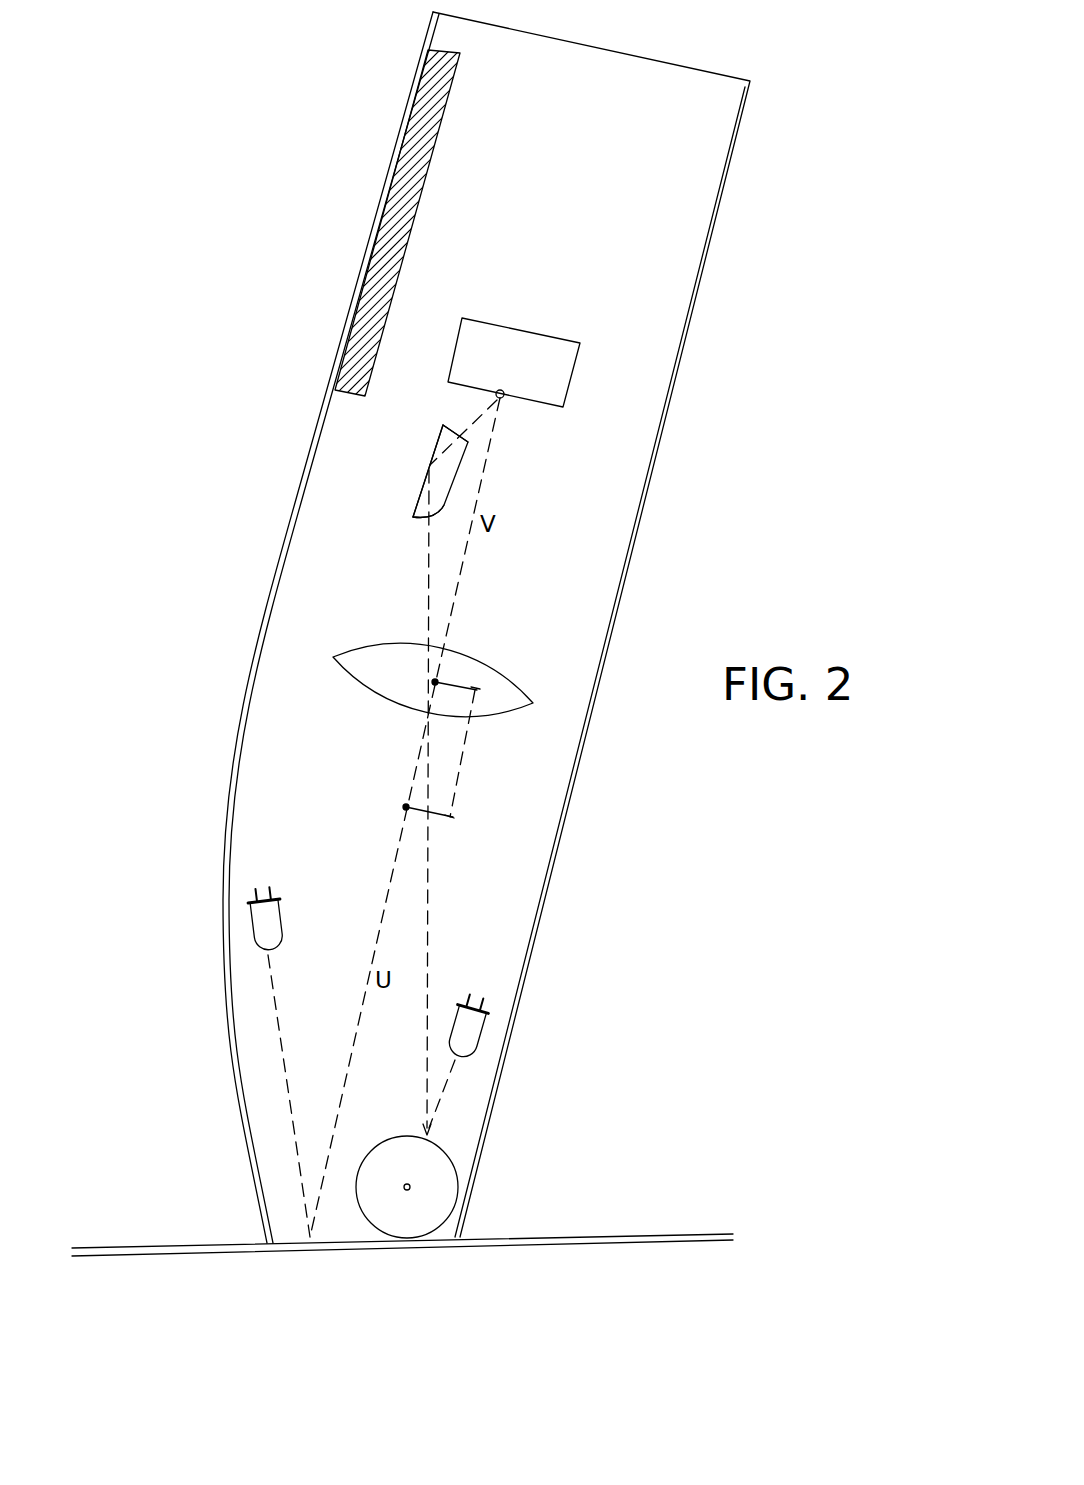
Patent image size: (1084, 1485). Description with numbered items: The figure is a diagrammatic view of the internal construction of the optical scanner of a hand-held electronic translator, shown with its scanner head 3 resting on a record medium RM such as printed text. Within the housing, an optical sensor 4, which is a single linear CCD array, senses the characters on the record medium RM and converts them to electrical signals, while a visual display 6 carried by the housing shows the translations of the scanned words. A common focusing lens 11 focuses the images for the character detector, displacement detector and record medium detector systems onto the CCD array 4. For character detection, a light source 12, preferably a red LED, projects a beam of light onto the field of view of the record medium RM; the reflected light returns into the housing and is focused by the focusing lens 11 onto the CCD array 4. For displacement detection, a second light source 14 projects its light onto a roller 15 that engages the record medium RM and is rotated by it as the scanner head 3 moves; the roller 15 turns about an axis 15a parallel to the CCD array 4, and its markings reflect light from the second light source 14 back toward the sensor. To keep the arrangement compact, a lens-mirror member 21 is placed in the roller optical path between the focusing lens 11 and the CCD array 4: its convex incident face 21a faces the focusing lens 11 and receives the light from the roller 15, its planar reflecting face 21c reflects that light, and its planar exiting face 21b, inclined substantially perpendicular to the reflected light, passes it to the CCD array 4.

The scanner head 3 is at (253, 1180).
The optical sensor 4 is at (520, 348).
The visual display 6 is at (400, 172).
The focusing lens 11 is at (358, 663).
The light source 12 is at (265, 928).
The second light source 14 is at (467, 1030).
The roller 15 is at (453, 1157).
The axis 15a is at (407, 1190).
The lens-mirror member 21 is at (432, 455).
The incident face 21a is at (425, 520).
The exiting face 21b is at (455, 432).
The reflecting face 21c is at (417, 498).
The record medium RM is at (632, 1235).